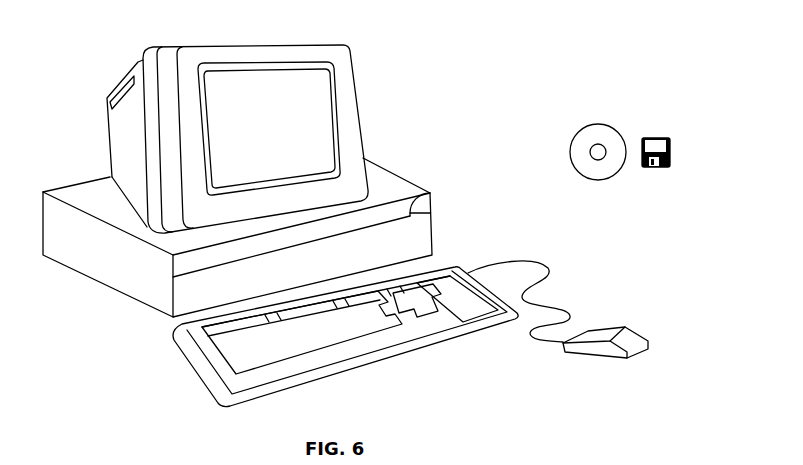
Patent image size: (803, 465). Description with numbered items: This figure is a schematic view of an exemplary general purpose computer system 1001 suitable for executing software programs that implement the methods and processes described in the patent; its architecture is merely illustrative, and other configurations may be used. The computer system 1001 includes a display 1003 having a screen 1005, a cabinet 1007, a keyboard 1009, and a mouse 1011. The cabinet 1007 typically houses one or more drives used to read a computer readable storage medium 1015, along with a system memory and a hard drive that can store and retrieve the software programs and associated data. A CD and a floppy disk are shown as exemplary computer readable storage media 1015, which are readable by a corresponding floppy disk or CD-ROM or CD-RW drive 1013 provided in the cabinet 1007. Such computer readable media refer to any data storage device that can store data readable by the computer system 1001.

The computer system 1001 is at (517, 76).
The display 1003 is at (271, 139).
The screen 1005 is at (333, 84).
The cabinet 1007 is at (268, 254).
The keyboard 1009 is at (348, 370).
The mouse 1011 is at (640, 334).
The floppy disk or CD-ROM or CD-RW drive 1013 is at (432, 194).
The computer readable storage medium 1015 is at (630, 120).